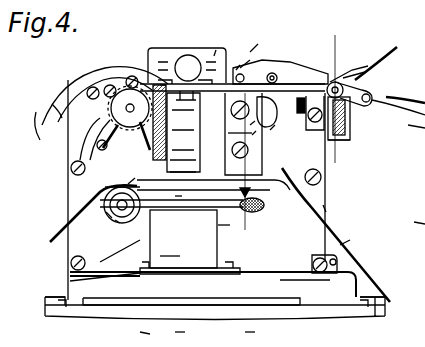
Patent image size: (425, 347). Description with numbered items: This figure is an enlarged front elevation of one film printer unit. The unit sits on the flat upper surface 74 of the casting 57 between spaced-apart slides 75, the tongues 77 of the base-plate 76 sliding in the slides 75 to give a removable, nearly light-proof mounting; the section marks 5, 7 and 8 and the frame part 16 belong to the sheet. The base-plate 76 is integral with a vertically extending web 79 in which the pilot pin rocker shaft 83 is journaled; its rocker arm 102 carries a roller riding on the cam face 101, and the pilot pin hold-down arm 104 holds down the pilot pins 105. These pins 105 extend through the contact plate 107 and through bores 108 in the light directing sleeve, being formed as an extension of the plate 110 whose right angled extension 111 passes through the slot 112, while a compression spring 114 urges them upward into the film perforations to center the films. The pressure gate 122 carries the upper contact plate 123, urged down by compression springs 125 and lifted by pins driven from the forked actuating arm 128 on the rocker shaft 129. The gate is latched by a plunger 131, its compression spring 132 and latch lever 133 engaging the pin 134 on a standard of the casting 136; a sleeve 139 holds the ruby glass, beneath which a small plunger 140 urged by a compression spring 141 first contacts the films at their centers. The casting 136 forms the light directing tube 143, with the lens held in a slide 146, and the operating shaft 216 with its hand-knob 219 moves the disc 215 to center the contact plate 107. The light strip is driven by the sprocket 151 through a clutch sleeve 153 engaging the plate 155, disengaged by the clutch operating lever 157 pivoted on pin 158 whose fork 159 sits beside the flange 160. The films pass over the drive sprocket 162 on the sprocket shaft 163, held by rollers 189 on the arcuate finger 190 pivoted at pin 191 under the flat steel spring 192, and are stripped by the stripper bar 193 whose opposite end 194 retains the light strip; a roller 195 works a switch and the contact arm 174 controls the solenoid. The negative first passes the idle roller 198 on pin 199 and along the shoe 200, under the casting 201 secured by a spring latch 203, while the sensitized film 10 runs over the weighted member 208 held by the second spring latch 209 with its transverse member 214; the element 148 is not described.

The section line 5 is at (323, 205).
The section line / frame 7 is at (40, 118).
The takeup reel 8 is at (52, 104).
The sensitized film 10 is at (397, 56).
The frame member 16 is at (418, 216).
The casting 57 is at (97, 310).
The flat upper surface 74 is at (306, 280).
The slides 75 is at (45, 298).
The base-plate 76 is at (360, 280).
The tongues 77 is at (58, 307).
The web 79 is at (255, 121).
The pilot pin rocker shaft 83 is at (256, 131).
The cam face 101 is at (239, 126).
The rocker arm 102 is at (234, 145).
The pilot pin hold-down arm 104 is at (95, 152).
The pilot pins 105 is at (177, 87).
The contact plate 107 is at (196, 58).
The bores 108 is at (122, 176).
The plate 110 is at (114, 186).
The right angled extension 111 is at (122, 177).
The slot 112 is at (160, 130).
The compression spring 114 is at (183, 166).
The pressure gate 122 is at (240, 65).
The upper contact plate 123 is at (258, 44).
The compression springs 125 is at (216, 50).
The forked actuating arm 128 is at (275, 125).
The rocker shaft 129 is at (340, 140).
The plunger 131 is at (160, 85).
The compression spring 132 is at (145, 339).
The latch lever 133 is at (232, 112).
The pin 134 is at (188, 68).
The casting 136 is at (172, 256).
The sleeve 139 is at (180, 337).
The plunger 140 is at (250, 337).
The compression spring 141 is at (350, 240).
The light directing tube 143 is at (156, 225).
The slide 146 is at (175, 196).
The screw 148 is at (308, 170).
The sprocket 151 is at (115, 220).
The clutch sleeve 153 is at (106, 212).
The plate 155 is at (414, 119).
The clutch operating lever 157 is at (230, 225).
The pin 158 is at (183, 239).
The fork 159 is at (128, 242).
The flange 160 is at (110, 238).
The drive sprocket 162 is at (80, 96).
The sprocket shaft 163 is at (133, 74).
The contact arm 174 is at (350, 120).
The rollers 189 is at (92, 86).
The arcuate finger 190 is at (115, 84).
The pin 191 is at (80, 90).
The flat steel spring 192 is at (80, 135).
The stripper bar 193 is at (78, 148).
The opposite end 194 is at (100, 203).
The roller 195 is at (256, 178).
The idle roller 198 is at (370, 90).
The pin 199 is at (380, 102).
The shoe 200 is at (294, 72).
The casting 201 is at (342, 72).
The spring latch 203 is at (348, 68).
The weighted member 208 is at (336, 42).
The second spring latch 209 is at (264, 105).
The transverse member 214 is at (274, 58).
The disc 215 is at (255, 48).
The operating shaft 216 is at (277, 79).
The hand-knob 219 is at (318, 100).